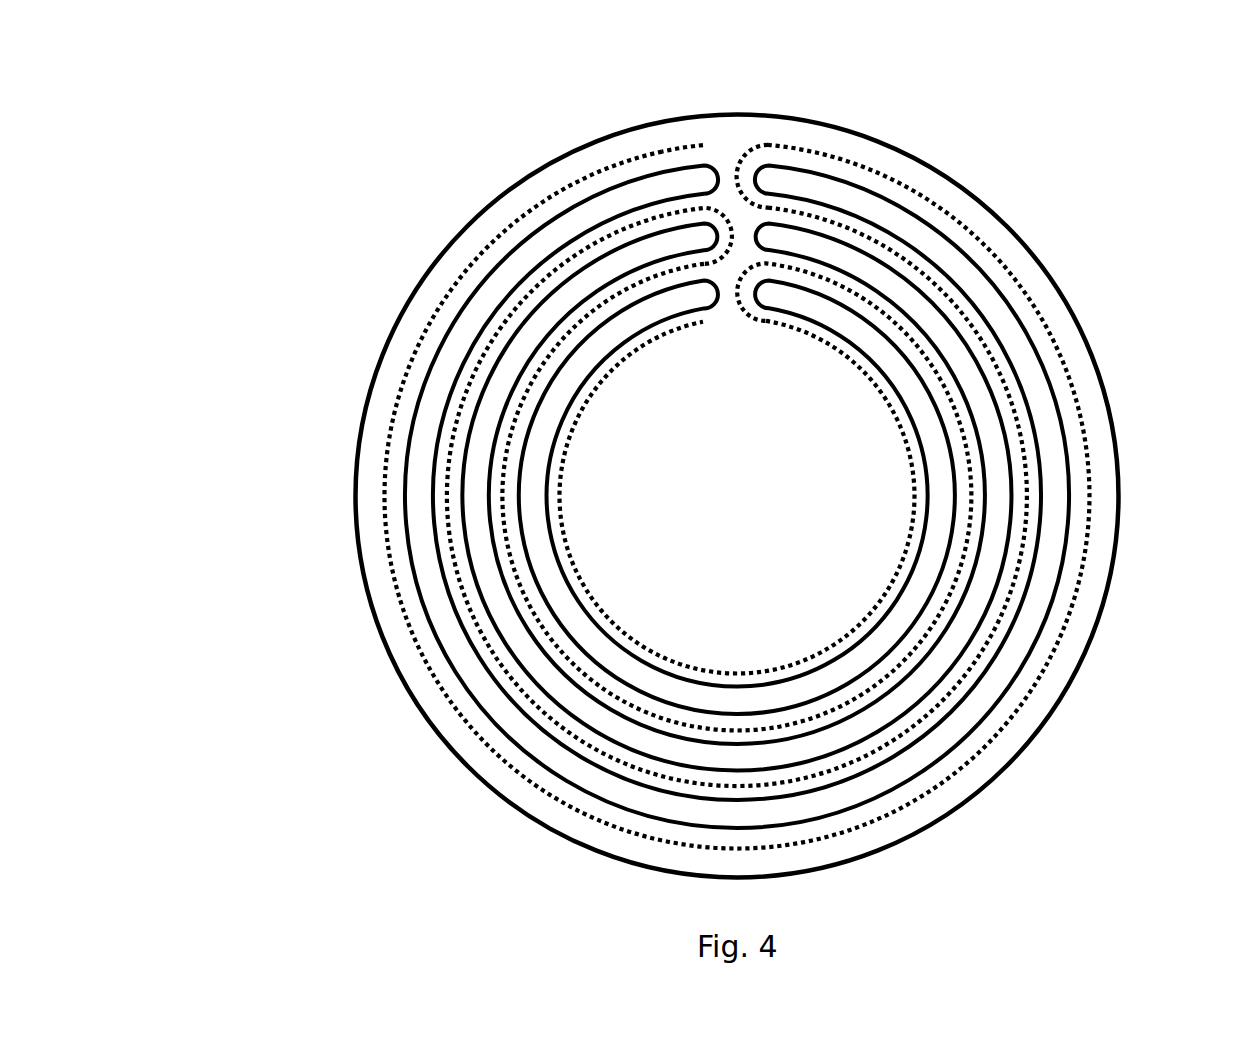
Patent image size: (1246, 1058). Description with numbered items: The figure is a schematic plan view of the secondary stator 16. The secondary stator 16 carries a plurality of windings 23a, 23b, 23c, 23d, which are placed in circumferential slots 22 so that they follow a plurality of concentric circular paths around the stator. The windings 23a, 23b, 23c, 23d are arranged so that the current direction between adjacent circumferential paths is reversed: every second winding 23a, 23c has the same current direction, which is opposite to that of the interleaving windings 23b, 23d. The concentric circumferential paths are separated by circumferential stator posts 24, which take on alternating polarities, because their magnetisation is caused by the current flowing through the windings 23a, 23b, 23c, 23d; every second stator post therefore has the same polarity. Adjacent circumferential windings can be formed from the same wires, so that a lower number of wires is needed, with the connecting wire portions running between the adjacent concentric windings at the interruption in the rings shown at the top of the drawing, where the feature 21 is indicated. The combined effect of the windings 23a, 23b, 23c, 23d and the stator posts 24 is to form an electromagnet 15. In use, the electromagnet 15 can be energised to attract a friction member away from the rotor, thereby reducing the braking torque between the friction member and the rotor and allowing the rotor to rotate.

The electromagnet 15 is at (718, 460).
The secondary stator 16 is at (1128, 306).
The free end of conductor track 21 is at (727, 145).
The circumferential slots 22 is at (828, 140).
The winding 23a is at (635, 153).
The winding 23b is at (543, 278).
The winding 23c is at (543, 355).
The winding 23d is at (557, 455).
The stator posts 24 is at (930, 242).